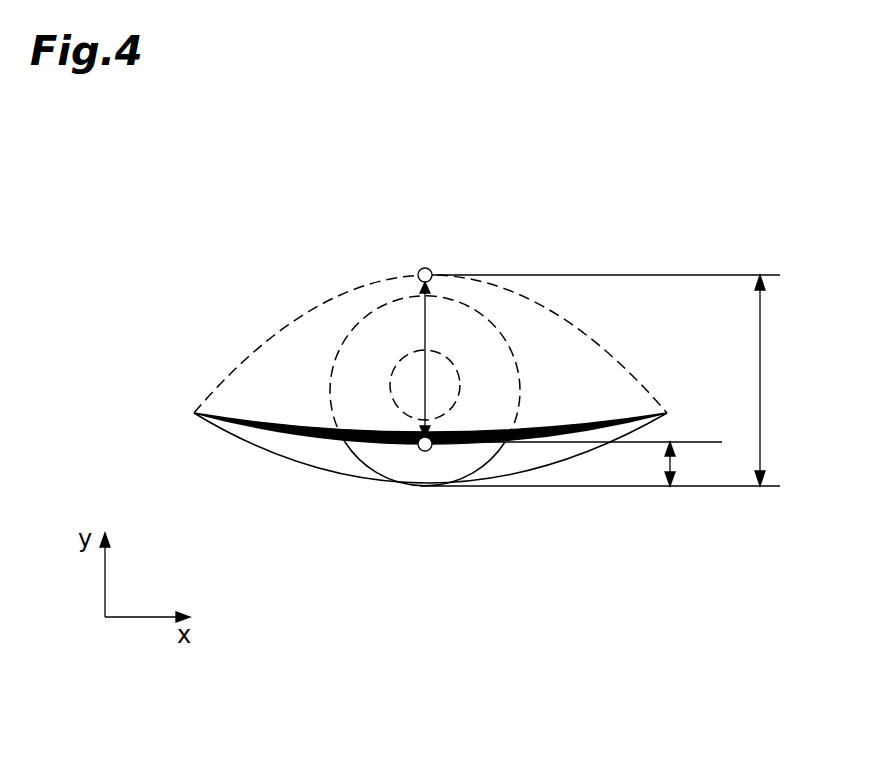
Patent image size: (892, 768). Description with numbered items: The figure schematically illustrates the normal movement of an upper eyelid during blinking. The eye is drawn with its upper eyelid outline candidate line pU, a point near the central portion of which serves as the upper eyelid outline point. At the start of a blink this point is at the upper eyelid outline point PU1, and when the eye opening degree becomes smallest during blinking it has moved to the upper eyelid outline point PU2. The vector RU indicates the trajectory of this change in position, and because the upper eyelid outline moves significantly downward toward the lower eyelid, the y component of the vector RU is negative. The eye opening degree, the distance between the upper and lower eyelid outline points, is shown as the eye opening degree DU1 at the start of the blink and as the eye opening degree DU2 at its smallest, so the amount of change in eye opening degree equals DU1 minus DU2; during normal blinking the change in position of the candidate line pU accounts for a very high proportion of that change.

The upper eyelid outline candidate line pU is at (315, 438).
The upper eyelid outline point in the start of a blink PU1 is at (425, 268).
The upper eyelid outline point when the eye opening degree becomes smallest PU2 is at (425, 451).
The vector indicating a trajectory of a change in the position of the upper eyelid o RU is at (427, 330).
The eye opening degree in the start of a blink DU1 is at (788, 380).
The eye opening degree when the eye opening degree becomes smallest during blinking DU2 is at (700, 464).